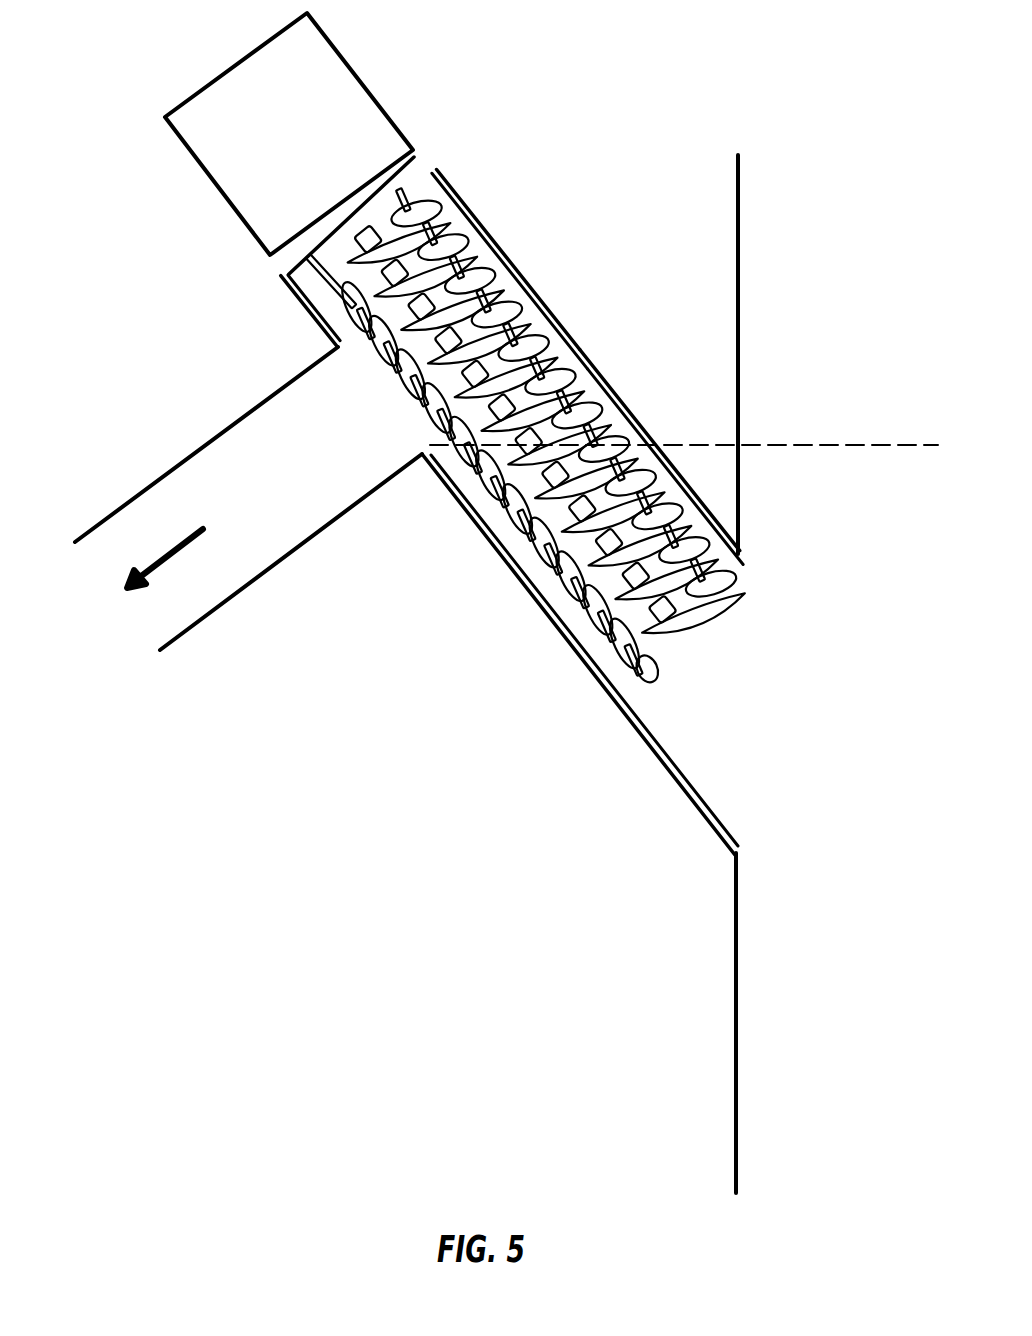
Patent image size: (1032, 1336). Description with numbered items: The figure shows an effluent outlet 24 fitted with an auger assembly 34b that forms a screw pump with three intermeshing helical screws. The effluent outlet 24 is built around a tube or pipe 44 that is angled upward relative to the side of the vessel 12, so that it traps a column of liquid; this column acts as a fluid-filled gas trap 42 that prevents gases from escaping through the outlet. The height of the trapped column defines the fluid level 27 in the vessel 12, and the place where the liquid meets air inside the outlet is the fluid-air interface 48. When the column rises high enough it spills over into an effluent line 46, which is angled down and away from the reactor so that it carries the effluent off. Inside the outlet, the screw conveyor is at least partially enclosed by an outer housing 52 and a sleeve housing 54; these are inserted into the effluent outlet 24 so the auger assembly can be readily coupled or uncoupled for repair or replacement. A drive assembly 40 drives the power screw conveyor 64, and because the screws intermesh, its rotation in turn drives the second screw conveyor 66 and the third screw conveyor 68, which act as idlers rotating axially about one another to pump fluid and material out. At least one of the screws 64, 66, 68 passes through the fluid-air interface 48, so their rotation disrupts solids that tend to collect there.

The vessel 12 is at (736, 199).
The effluent outlet 24 is at (140, 188).
The fluid level 27 is at (811, 446).
The conduit wall portion 34b is at (547, 300).
The drive assembly 40 is at (289, 134).
The fluid-filled gas trap 42 is at (542, 622).
The tube or pipe 44 is at (665, 459).
The effluent line 46 is at (222, 430).
The fluid-air interface 48 is at (515, 450).
The outer housing 52 is at (600, 381).
The sleeve housing 54 is at (510, 258).
The power screw conveyor 64 is at (312, 263).
The second screw conveyor 66 is at (437, 175).
The third screw conveyor 68 is at (297, 304).